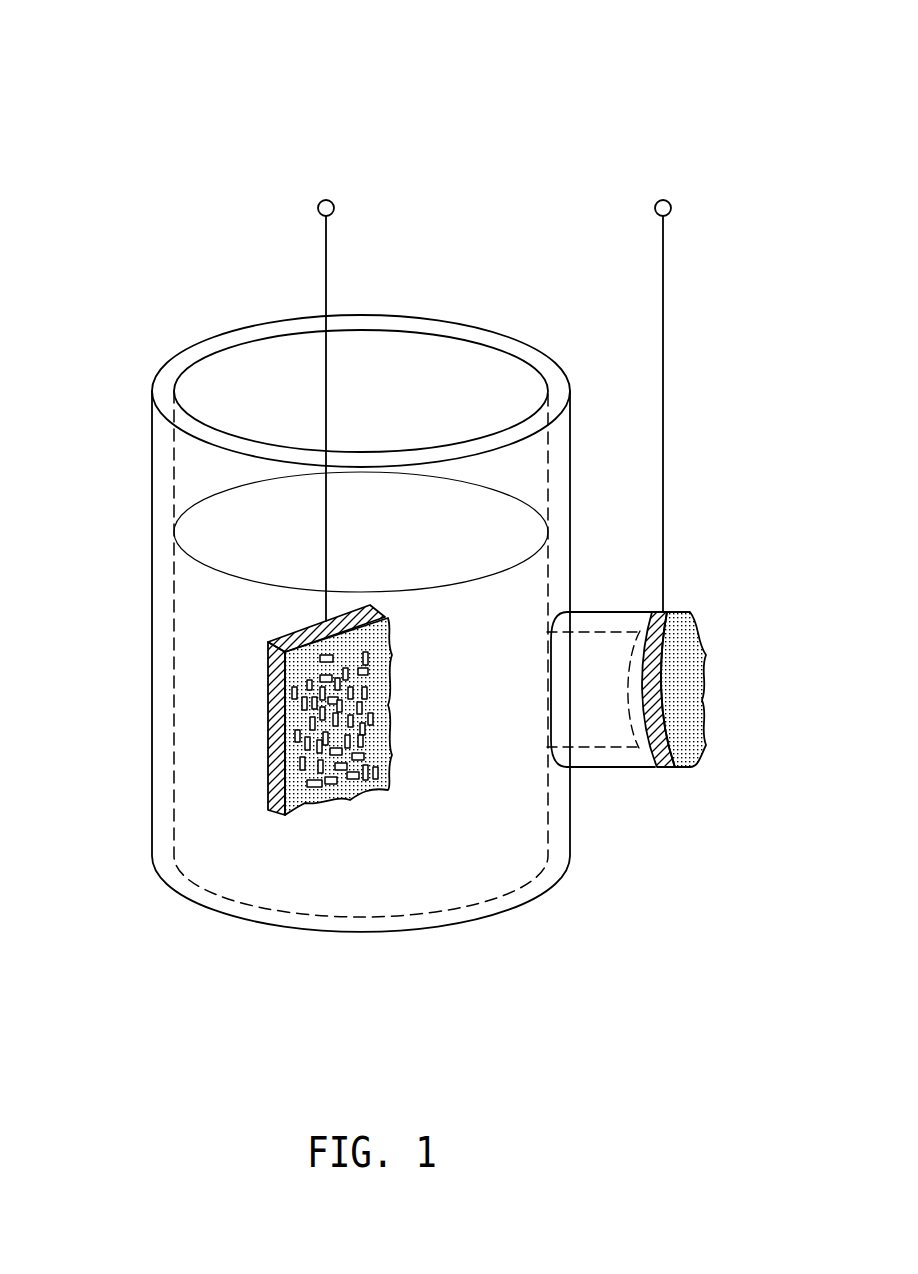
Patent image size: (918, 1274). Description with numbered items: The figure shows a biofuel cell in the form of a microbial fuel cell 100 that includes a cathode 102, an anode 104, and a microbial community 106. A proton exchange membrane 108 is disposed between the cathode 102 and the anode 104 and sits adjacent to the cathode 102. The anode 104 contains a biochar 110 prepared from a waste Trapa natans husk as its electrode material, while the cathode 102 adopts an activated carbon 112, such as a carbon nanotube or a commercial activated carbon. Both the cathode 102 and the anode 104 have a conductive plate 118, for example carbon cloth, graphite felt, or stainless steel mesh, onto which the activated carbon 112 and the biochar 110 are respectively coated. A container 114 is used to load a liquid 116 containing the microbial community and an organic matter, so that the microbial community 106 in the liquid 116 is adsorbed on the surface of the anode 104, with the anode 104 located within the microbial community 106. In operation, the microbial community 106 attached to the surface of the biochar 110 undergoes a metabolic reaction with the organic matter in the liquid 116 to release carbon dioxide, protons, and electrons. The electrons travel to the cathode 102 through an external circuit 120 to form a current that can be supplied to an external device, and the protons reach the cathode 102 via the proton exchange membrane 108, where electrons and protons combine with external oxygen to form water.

The microbial fuel cell 100 is at (162, 98).
The cathode 102 is at (745, 852).
The anode 104 is at (368, 1022).
The microbial community 106 is at (392, 786).
The proton exchange membrane 108 is at (645, 640).
The biochar 110 is at (327, 813).
The activated carbon 112 is at (698, 770).
The container 114 is at (152, 477).
The liquid 116 is at (505, 530).
The conductive plate 118 is at (272, 815).
The external circuit 120 is at (326, 243).